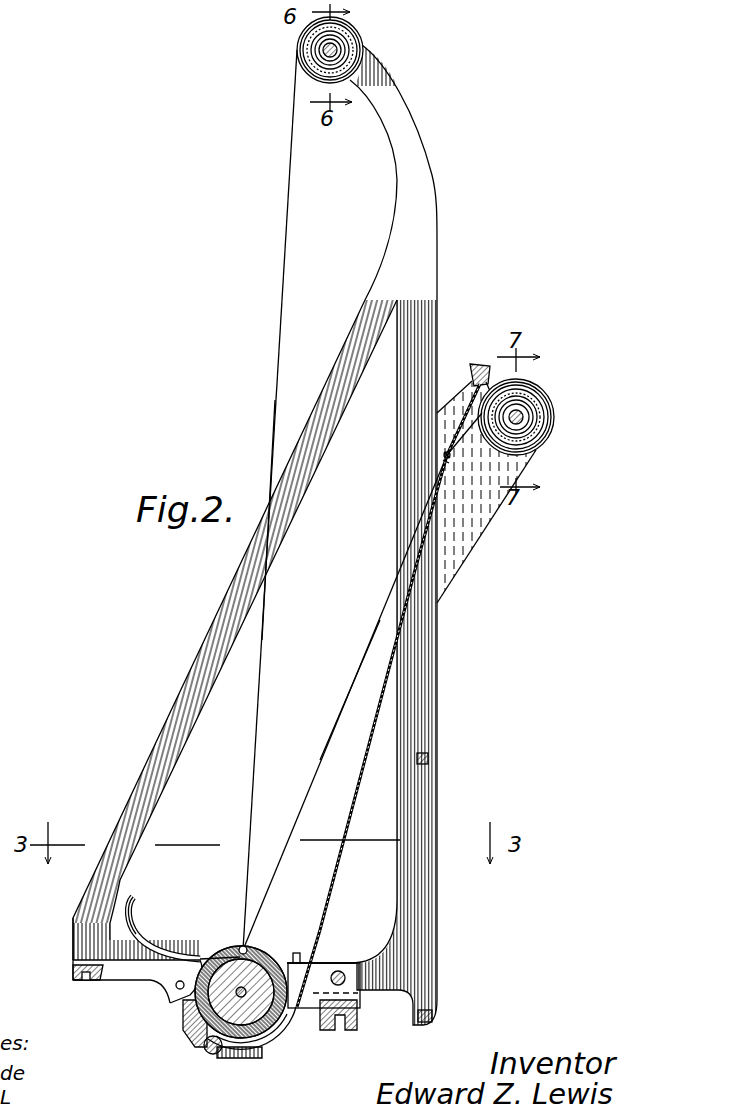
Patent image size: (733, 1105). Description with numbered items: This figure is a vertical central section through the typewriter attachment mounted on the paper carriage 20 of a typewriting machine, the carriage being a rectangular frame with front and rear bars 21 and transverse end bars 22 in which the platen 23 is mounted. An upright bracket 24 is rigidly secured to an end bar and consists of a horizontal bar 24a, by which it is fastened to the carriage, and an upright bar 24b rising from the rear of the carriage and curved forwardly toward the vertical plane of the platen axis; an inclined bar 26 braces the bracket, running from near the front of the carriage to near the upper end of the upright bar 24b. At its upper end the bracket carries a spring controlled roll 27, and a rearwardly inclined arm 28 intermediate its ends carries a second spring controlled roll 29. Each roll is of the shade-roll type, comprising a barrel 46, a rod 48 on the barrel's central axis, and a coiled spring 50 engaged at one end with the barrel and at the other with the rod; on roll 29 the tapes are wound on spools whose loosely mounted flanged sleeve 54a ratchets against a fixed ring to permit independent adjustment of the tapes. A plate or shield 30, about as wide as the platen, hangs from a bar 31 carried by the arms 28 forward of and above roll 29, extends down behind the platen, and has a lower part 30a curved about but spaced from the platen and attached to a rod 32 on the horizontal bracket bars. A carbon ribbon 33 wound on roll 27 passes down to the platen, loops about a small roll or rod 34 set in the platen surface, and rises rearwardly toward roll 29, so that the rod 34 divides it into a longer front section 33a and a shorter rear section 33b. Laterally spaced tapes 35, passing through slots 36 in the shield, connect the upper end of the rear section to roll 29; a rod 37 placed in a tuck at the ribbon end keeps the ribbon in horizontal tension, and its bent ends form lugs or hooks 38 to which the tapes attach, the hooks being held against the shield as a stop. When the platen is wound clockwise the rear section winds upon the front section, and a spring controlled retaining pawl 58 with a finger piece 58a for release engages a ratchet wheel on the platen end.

The paper carriage 20 is at (69, 972).
The front and rear bars 21 is at (73, 980).
The transverse end bars 22 is at (136, 980).
The platen 23 is at (204, 1018).
The upright bracket 24 is at (443, 722).
The horizontal bar 24a is at (118, 940).
The upright bar 24b is at (437, 790).
The inclined bar 26 is at (126, 807).
The spring controlled roll 27 is at (296, 52).
The rearwardly inclined arm 28 is at (469, 520).
The second spring controlled roll 29 is at (549, 399).
The plate or shield 30 is at (342, 800).
The lower shield part 30a is at (258, 1058).
The bar 31 is at (481, 364).
The rod 32 is at (212, 1055).
The carbon ribbon 33 is at (289, 186).
The front ribbon section 33a is at (261, 698).
The rear ribbon section 33b is at (338, 712).
The small roll or rod 34 is at (246, 946).
The tapes 35 is at (480, 420).
The slots 36 is at (445, 452).
The rod 37 is at (446, 461).
The lugs or hooks 38 is at (446, 455).
The barrel 46 is at (356, 65).
The rod 48 is at (338, 46).
The coiled spring 50 is at (350, 52).
The flanged sleeve 54a is at (540, 412).
The retaining pawl 58 is at (203, 955).
The finger piece 58a is at (138, 944).